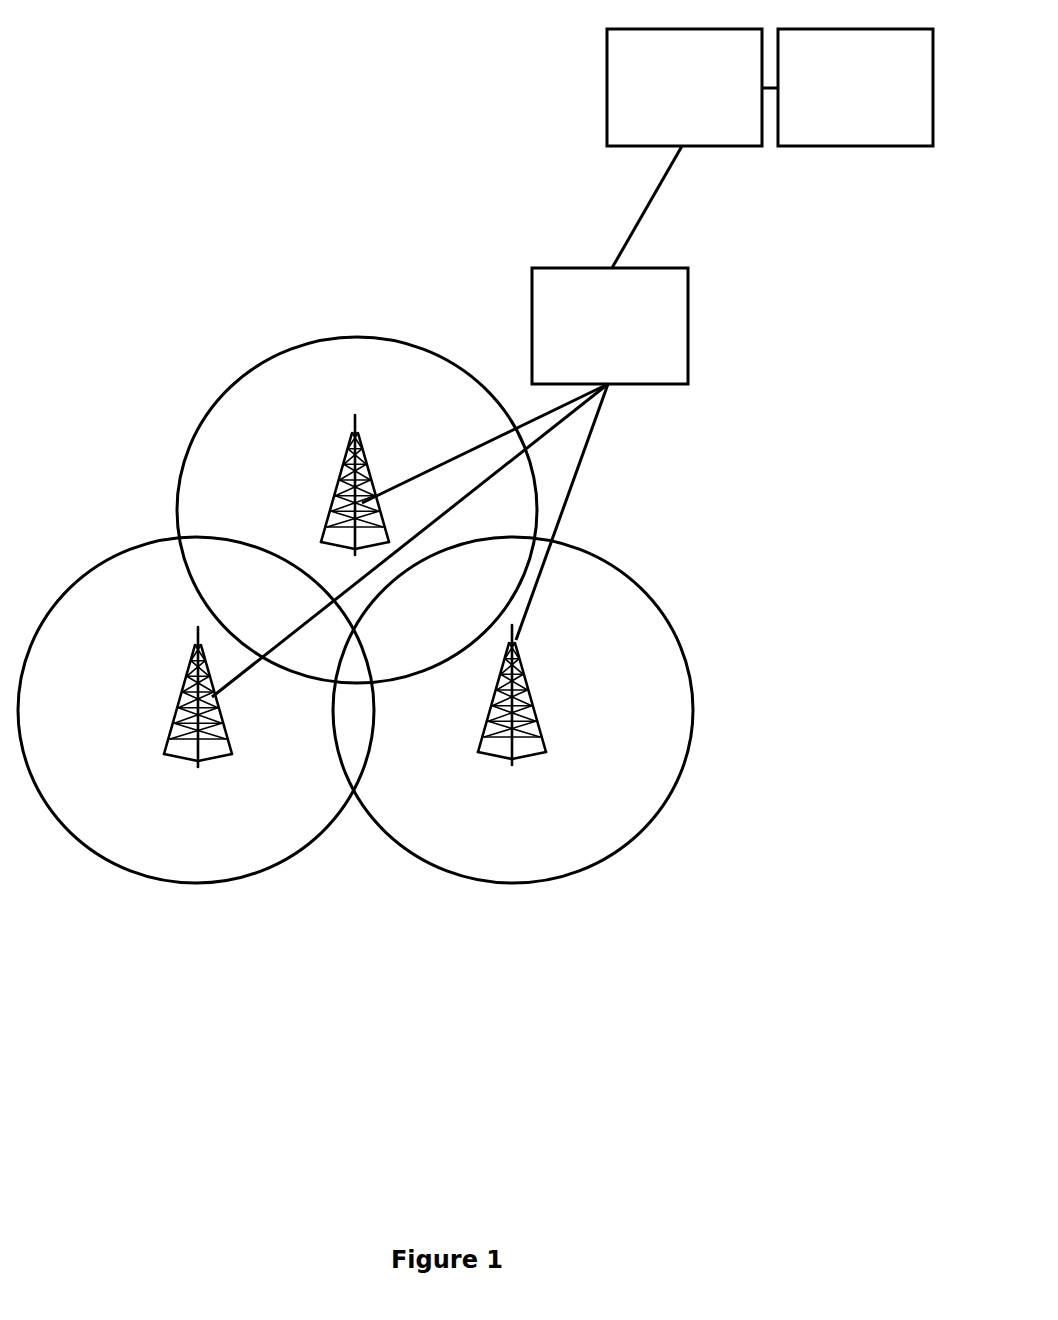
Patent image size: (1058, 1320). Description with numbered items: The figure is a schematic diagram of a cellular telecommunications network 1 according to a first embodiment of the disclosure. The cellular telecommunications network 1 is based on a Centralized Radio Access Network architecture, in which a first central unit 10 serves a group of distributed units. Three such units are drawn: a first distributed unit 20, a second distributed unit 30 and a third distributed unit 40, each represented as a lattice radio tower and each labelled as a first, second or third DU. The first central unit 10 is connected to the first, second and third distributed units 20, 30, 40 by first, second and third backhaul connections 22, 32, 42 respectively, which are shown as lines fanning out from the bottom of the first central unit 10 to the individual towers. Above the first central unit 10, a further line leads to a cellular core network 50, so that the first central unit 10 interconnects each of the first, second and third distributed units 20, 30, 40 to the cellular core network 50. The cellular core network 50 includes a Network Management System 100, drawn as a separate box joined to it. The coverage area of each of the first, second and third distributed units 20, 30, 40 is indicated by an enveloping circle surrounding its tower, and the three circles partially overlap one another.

The cellular telecommunications network 1 is at (108, 276).
The first central unit 10 is at (570, 268).
The first distributed unit 20 is at (352, 432).
The first backhaul connection 22 is at (560, 411).
The second distributed unit 30 is at (194, 651).
The second backhaul connection 32 is at (556, 437).
The third distributed unit 40 is at (521, 670).
The third backhaul connection 42 is at (574, 482).
The cellular core network 50 is at (668, 29).
The Network Management System 100 is at (835, 29).